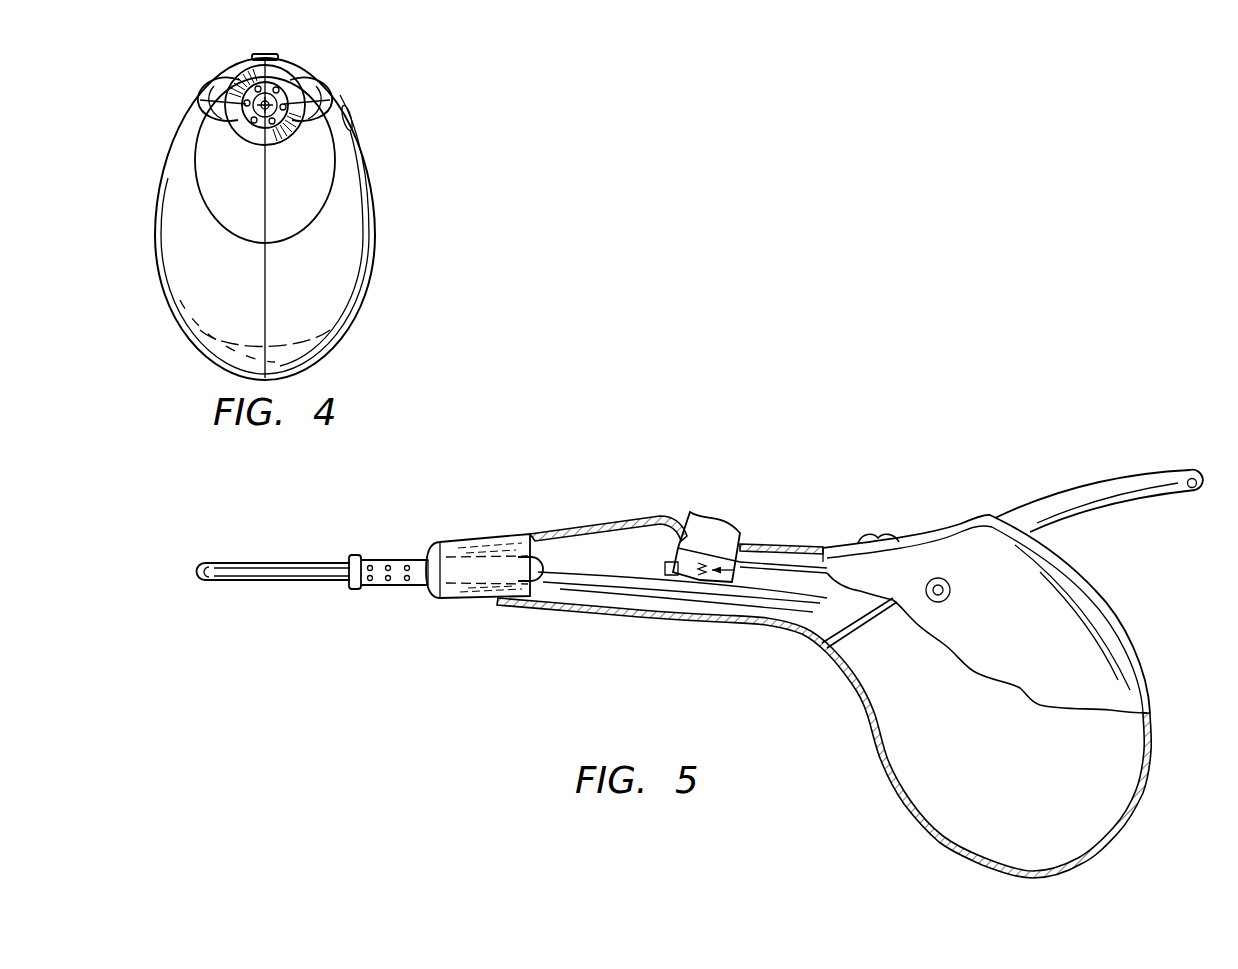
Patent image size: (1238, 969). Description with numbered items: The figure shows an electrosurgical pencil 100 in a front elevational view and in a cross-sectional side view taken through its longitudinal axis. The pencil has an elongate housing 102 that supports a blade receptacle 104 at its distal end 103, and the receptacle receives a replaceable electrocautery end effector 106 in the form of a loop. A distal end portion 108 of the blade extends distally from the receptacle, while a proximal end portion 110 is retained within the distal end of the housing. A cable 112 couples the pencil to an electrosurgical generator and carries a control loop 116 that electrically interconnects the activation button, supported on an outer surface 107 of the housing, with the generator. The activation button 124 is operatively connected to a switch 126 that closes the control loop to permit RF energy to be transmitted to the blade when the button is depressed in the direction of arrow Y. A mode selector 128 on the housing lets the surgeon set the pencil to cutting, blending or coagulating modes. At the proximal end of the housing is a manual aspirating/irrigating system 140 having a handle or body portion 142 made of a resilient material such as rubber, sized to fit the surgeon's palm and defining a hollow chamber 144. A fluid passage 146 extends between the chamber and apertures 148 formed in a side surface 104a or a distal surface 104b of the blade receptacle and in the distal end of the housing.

In FIG. 4, the electrosurgical pencil 100 is at (482, 95).
In FIG. 5, the electrosurgical pencil 100 is at (882, 461).
In FIG. 4, the elongate housing 102 is at (312, 120).
In FIG. 5, the elongate housing 102 is at (586, 518).
In FIG. 4, the distal end 103 is at (290, 90).
In FIG. 5, the distal end 103 is at (435, 600).
In FIG. 5, the blade receptacle 104 is at (383, 553).
In FIG. 5, the side surface 104a is at (422, 560).
In FIG. 4, the distal surface 104b is at (255, 112).
In FIG. 5, the distal surface 104b is at (348, 555).
In FIG. 5, the electrocautery end effector 106 is at (230, 553).
In FIG. 5, the outer surface 107 is at (492, 545).
In FIG. 5, the distal end portion 108 is at (207, 583).
In FIG. 5, the proximal end portion 110 is at (520, 597).
In FIG. 5, the cable 112 is at (1123, 476).
In FIG. 5, the control loop 116 is at (787, 546).
In FIG. 4, the activation button 124 is at (275, 53).
In FIG. 5, the activation button 124 is at (723, 518).
In FIG. 5, the switch 126 is at (688, 565).
In FIG. 5, the mode selector 128 is at (878, 532).
In FIG. 4, the manual aspirating/irrigating system 140 is at (382, 288).
In FIG. 5, the manual aspirating/irrigating system 140 is at (1148, 672).
In FIG. 4, the handle or body portion 142 is at (368, 218).
In FIG. 5, the handle or body portion 142 is at (1100, 608).
In FIG. 5, the hollow chamber 144 is at (1070, 745).
In FIG. 5, the fluid passage 146 is at (758, 605).
In FIG. 4, the apertures 148 is at (262, 80).
In FIG. 5, the apertures 148 is at (372, 582).